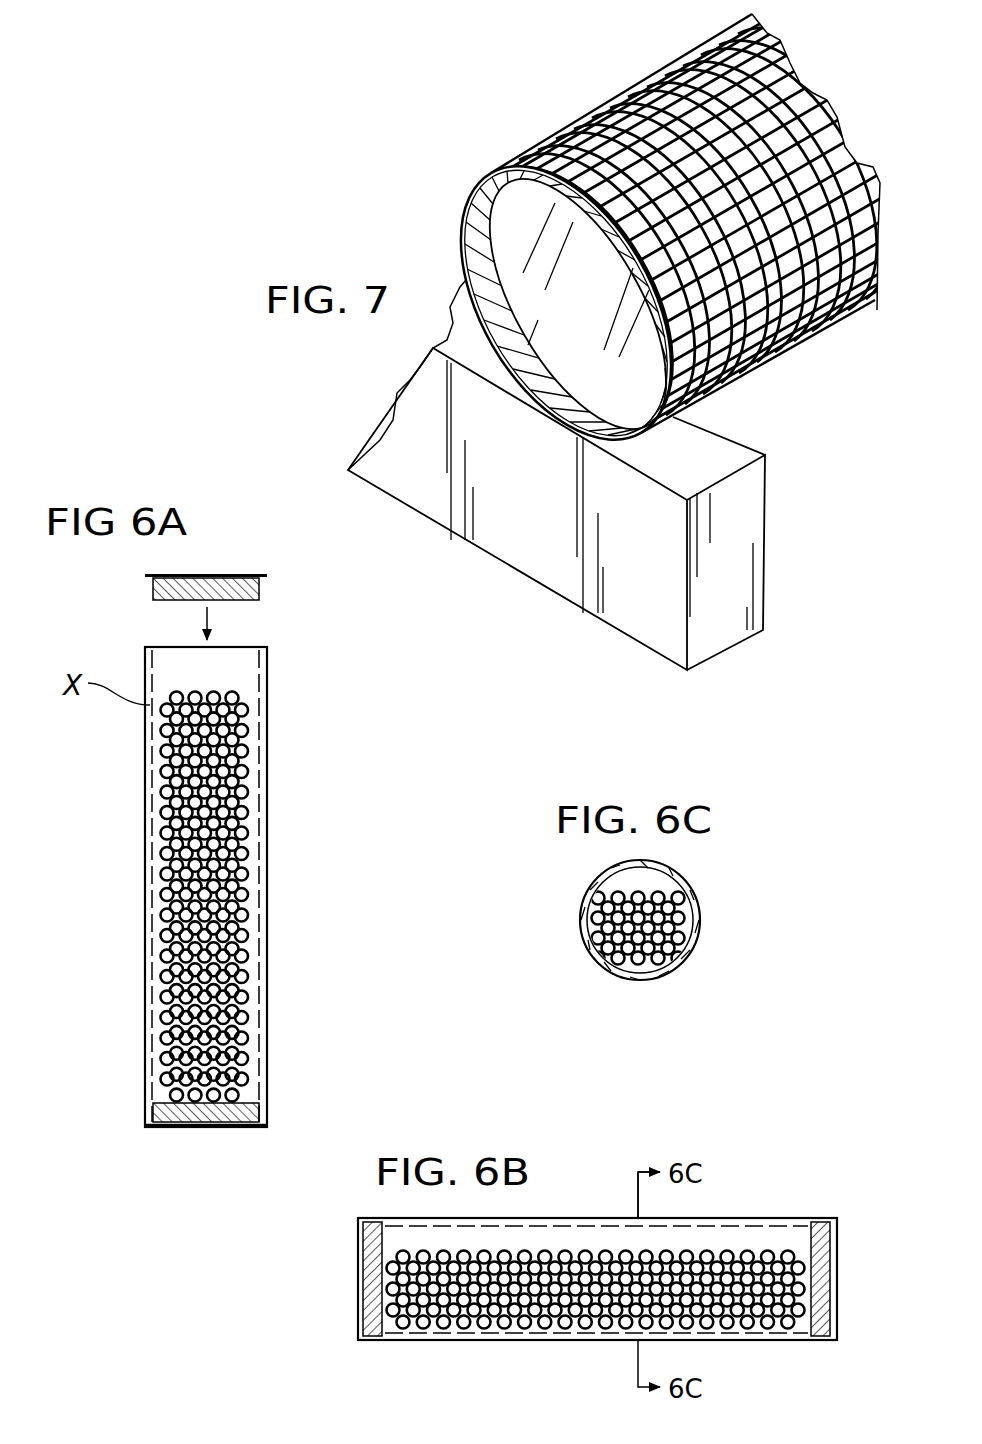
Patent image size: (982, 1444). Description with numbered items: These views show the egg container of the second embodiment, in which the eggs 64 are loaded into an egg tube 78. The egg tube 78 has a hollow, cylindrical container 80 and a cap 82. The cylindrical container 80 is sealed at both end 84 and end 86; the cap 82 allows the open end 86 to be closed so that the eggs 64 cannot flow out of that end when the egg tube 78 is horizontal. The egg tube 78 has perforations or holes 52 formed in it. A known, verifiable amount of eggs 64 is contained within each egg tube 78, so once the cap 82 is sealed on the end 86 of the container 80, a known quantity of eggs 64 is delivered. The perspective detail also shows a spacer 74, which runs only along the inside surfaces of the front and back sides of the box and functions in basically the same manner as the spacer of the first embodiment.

In FIG. 7, the perforations or holes 52 is at (797, 325).
In FIG. 7, the spacer 74 is at (652, 608).
In FIG. 6A, the egg tube 78 is at (118, 790).
In FIG. 6C, the egg tube 78 is at (566, 968).
In FIG. 6B, the egg tube 78 is at (566, 1358).
In FIG. 6A, the hollow, cylindrical container 80 is at (258, 686).
In FIG. 6A, the cap 82 is at (210, 572).
In FIG. 6A, the end 84 is at (172, 1125).
In FIG. 6A, the end 86 is at (256, 647).
In FIG. 6A, the eggs 64 is at (243, 778).